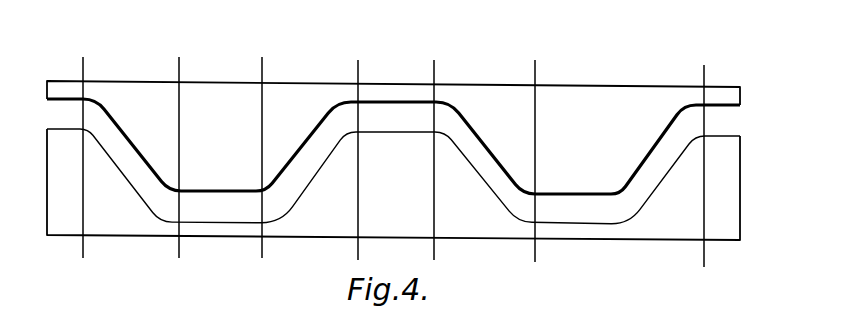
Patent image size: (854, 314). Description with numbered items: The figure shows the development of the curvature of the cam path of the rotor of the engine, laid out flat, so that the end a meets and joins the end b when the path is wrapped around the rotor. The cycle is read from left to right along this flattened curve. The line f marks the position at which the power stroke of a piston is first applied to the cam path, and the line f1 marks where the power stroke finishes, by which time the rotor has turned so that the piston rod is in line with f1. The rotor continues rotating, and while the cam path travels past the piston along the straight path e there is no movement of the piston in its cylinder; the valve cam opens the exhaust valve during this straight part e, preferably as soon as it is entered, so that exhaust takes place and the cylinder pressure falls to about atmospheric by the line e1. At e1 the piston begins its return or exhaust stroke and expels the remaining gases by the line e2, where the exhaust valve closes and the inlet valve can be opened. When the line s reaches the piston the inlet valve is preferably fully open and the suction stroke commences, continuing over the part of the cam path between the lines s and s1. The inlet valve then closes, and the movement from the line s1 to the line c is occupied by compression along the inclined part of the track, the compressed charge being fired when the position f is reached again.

The end of cam path a is at (381, 184).
The end of cam path b is at (406, 141).
The line c is at (705, 150).
The straight path of cam e is at (393, 176).
The line e1 is at (268, 140).
The line e2 is at (364, 141).
The line f is at (84, 140).
The line f1 is at (182, 140).
The line s is at (440, 141).
The line s1 is at (539, 142).